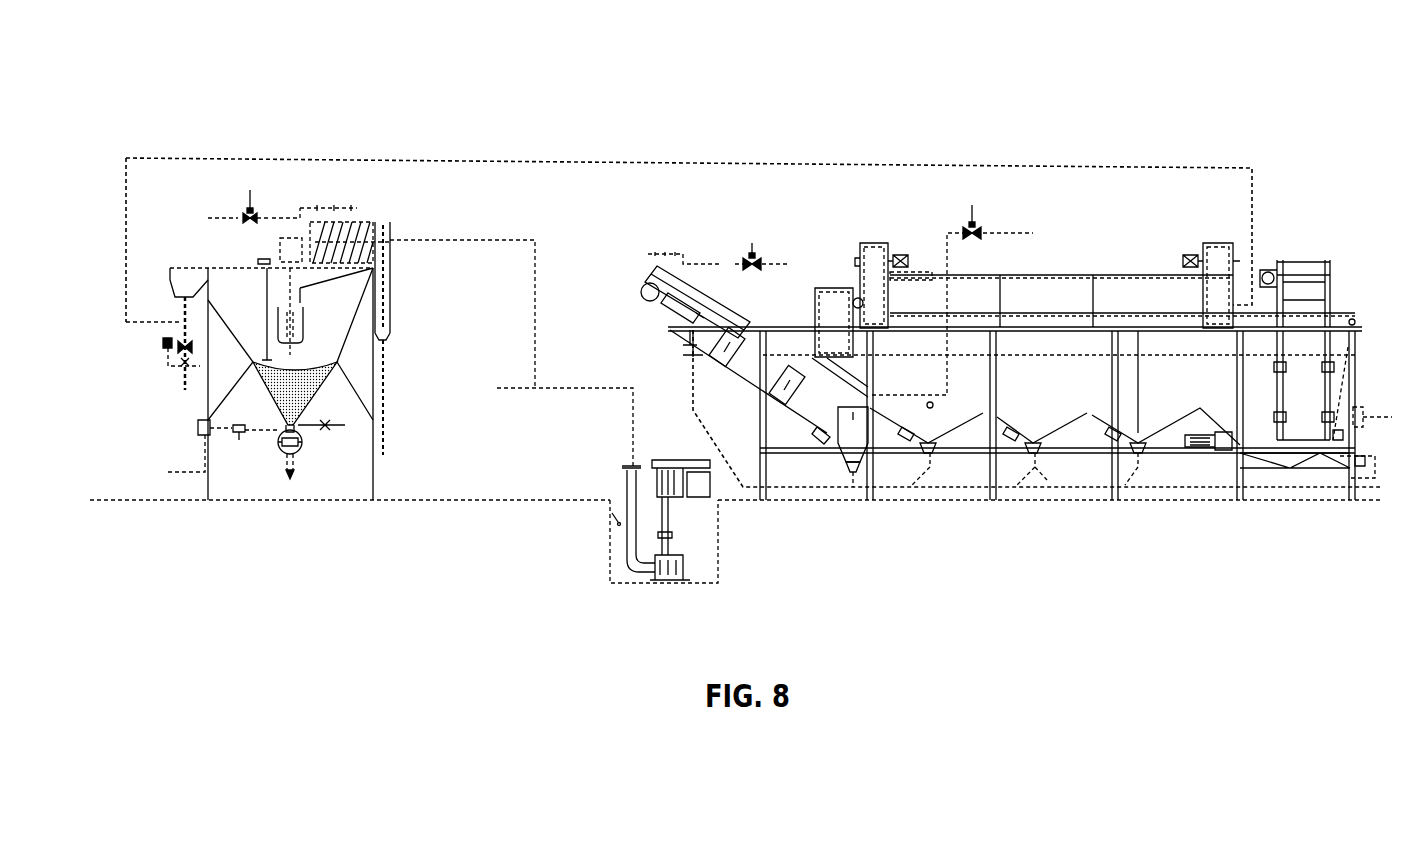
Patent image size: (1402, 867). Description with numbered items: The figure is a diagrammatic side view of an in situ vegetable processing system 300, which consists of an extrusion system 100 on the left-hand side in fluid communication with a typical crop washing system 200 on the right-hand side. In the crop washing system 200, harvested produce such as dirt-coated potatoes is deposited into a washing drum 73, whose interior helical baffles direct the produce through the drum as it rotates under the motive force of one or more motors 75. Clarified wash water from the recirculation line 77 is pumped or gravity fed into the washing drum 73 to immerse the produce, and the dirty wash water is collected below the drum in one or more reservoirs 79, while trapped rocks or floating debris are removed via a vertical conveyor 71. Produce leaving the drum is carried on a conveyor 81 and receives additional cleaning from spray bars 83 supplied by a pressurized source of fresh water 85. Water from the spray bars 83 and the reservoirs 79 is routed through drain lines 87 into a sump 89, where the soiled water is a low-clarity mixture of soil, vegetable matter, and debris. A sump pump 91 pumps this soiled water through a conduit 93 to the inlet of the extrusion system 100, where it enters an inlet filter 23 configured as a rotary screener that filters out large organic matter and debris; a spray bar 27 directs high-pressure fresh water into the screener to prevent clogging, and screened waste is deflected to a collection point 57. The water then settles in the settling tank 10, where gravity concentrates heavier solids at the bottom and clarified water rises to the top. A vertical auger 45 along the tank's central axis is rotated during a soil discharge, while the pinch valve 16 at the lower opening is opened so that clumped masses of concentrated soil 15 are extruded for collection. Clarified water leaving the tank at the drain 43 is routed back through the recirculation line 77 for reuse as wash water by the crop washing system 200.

The in situ vegetable processing system 300 is at (775, 56).
The extrusion system 100 is at (253, 124).
The crop washing system 200 is at (1113, 132).
The recirculation line 77 is at (538, 156).
The settling tank 10 is at (198, 250).
The drain 43 is at (168, 283).
The auger 45 is at (277, 250).
The pressurized source of fresh water 85 is at (228, 216).
The spray bar 27 is at (329, 210).
The inlet filter 23 is at (367, 222).
The collection point 57 is at (391, 333).
The pinch valve 16 is at (285, 450).
The concentrated soil 15 is at (295, 470).
The conduit 93 is at (541, 294).
The washing drum 73 is at (1056, 275).
The motor 75 is at (900, 252).
The spray bar 83 is at (666, 252).
The vertical conveyor 71 is at (1327, 264).
The conveyor 81 is at (652, 316).
The reservoir 79 is at (940, 420).
The drain line 87 is at (691, 392).
The sump 89 is at (605, 565).
The sump pump 91 is at (654, 536).